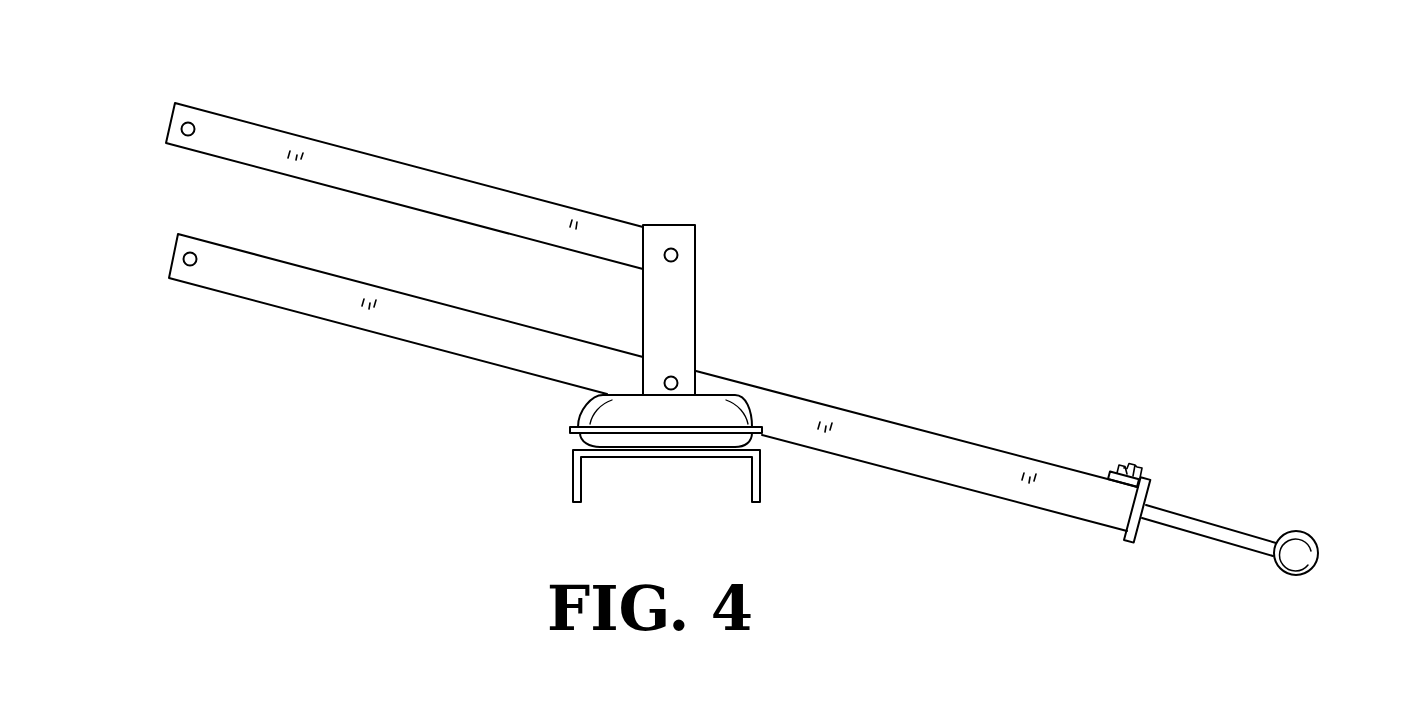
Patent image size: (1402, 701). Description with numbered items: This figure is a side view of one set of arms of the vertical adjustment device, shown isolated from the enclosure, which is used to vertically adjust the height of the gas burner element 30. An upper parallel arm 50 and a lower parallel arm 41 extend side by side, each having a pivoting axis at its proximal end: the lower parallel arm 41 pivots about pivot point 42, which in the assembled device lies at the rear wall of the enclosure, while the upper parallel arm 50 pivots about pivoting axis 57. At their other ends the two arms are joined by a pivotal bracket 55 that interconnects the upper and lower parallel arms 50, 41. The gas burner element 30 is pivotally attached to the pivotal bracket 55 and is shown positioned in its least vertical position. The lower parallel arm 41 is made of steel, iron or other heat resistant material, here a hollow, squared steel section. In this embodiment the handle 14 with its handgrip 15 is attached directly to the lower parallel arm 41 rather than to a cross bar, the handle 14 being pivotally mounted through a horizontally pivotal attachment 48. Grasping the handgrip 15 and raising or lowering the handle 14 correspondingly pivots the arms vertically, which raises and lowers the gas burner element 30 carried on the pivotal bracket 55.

The handle 14 is at (1225, 528).
The handgrip 15 is at (1317, 561).
The gas burner element 30 is at (563, 436).
The lower parallel arm 41 is at (493, 350).
The pivot point 42 is at (183, 262).
The horizontally pivotal attachment 48 is at (1137, 535).
The upper parallel arm 50 is at (512, 196).
The pivotal bracket 55 is at (683, 312).
The pivoting axis 57 is at (181, 127).